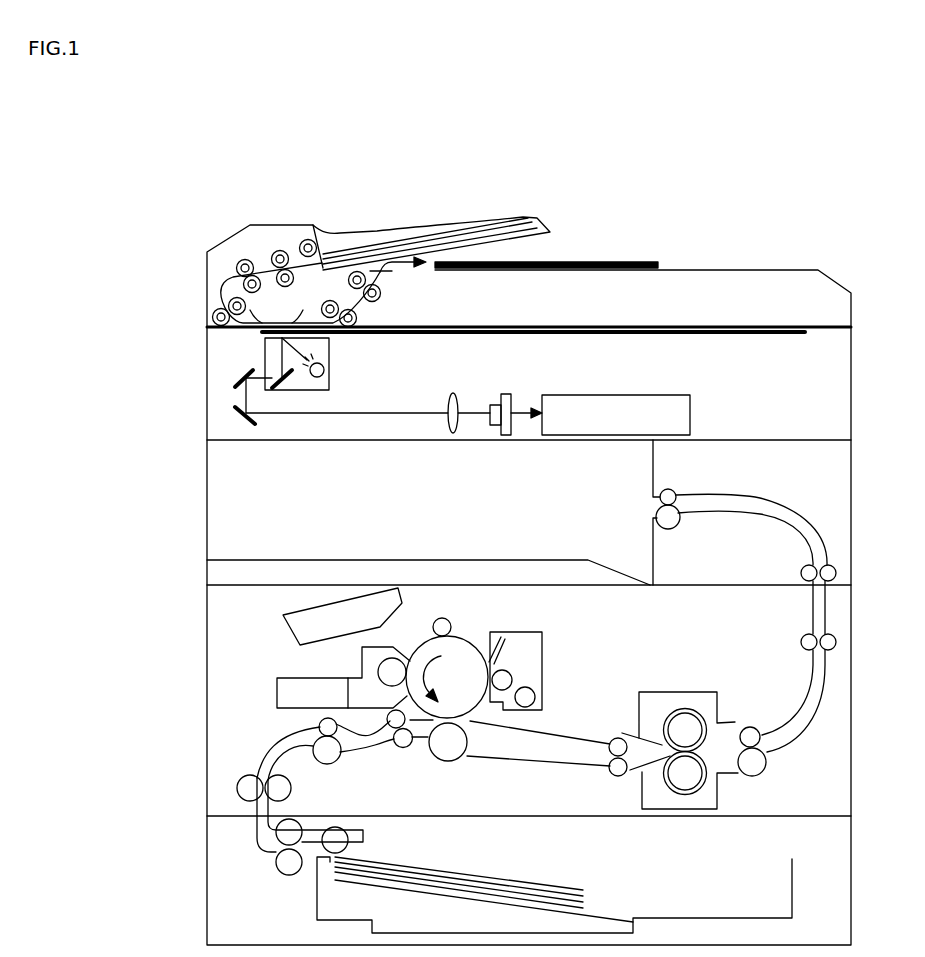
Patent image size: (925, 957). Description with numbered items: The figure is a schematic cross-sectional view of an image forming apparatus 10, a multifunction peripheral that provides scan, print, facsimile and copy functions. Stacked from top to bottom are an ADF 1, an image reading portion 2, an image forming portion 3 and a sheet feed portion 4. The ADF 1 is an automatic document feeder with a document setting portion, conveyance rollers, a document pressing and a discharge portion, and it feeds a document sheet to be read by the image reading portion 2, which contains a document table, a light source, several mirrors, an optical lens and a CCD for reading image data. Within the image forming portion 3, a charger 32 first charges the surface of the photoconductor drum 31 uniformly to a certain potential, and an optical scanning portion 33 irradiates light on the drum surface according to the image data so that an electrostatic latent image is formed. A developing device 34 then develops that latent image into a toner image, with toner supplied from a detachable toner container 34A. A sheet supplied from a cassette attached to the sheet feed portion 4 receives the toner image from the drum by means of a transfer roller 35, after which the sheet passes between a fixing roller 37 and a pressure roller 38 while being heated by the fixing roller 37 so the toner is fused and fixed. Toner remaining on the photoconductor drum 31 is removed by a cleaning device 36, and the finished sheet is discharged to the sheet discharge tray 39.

The image forming apparatus 10 is at (193, 188).
The ADF 1 is at (207, 273).
The image reading portion 2 is at (207, 397).
The image forming portion 3 is at (233, 614).
The sheet feed portion 4 is at (207, 882).
The sheet discharge tray 39 is at (550, 560).
The photoconductor drum 31 is at (468, 638).
The charger 32 is at (433, 625).
The optical scanning portion 33 is at (288, 635).
The developing device 34 is at (362, 660).
The toner container 34A is at (277, 705).
The transfer roller 35 is at (448, 762).
The cleaning device 36 is at (520, 632).
The fixing roller 37 is at (690, 708).
The pressure roller 38 is at (690, 796).